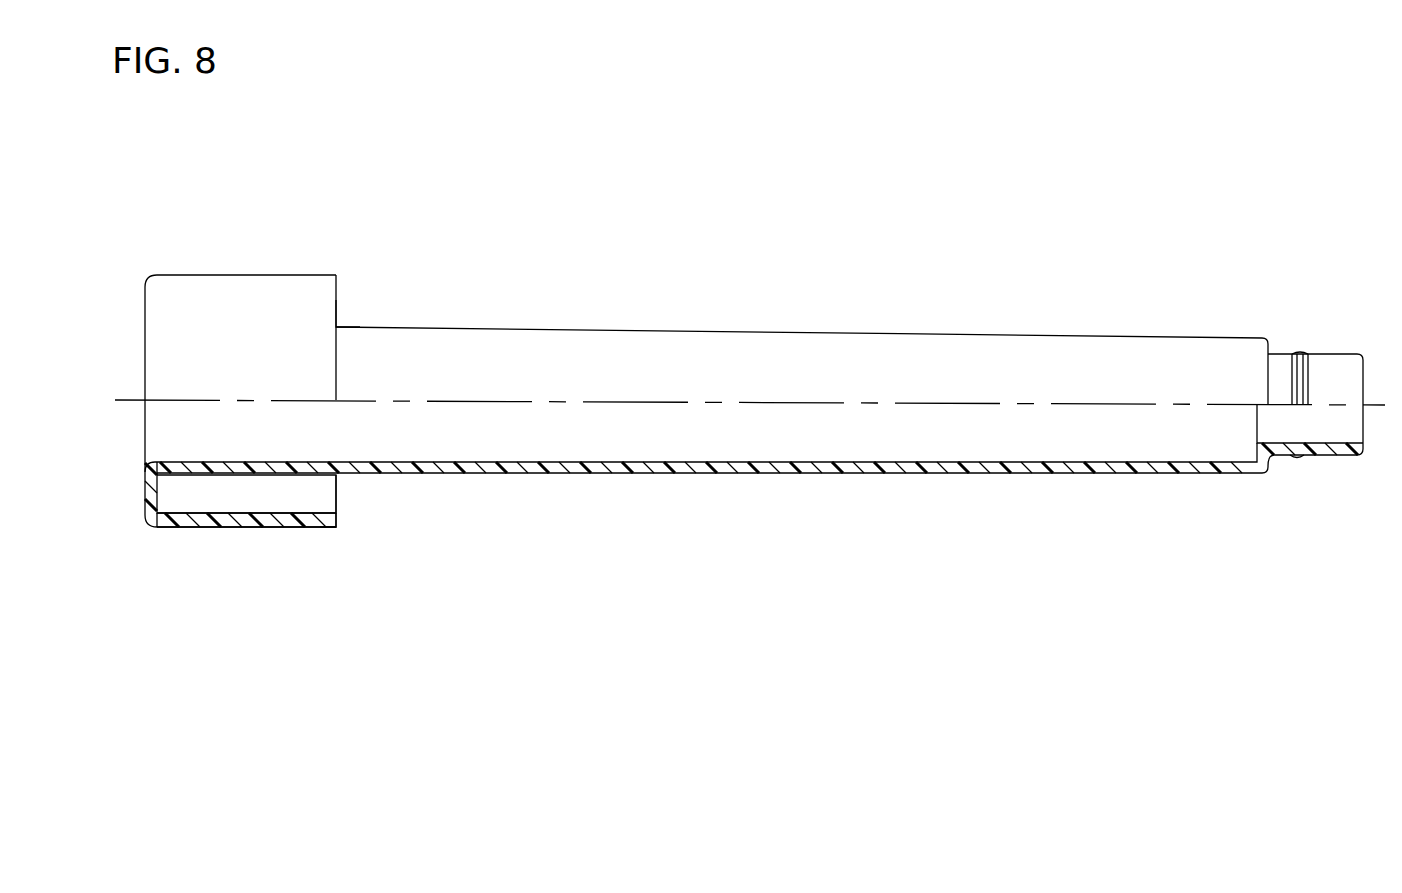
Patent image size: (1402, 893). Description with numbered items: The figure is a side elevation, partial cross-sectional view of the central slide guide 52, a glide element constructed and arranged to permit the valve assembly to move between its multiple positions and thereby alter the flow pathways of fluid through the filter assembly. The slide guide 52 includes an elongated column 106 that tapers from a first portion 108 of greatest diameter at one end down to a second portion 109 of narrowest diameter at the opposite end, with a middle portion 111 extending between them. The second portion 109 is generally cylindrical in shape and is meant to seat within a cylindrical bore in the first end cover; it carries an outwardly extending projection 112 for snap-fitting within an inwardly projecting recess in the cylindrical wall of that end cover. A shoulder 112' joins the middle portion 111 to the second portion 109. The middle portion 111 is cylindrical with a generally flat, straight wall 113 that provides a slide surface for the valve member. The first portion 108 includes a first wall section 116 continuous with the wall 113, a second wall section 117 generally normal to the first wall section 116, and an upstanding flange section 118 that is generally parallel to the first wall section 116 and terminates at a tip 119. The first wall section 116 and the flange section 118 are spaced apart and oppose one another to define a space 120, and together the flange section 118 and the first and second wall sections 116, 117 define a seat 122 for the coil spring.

The central slide guide 52 is at (878, 288).
The elongated column 106 is at (678, 332).
The first portion 108 is at (248, 275).
The second portion 109 is at (1337, 355).
The middle portion 111 is at (978, 333).
The outwardly extending projection 112 is at (1289, 324).
The shoulder 112' is at (1314, 498).
The flat, straight wall 113 is at (503, 470).
The first wall section 116 is at (168, 468).
The second wall section 117 is at (143, 503).
The upstanding flange section 118 is at (198, 518).
The tip 119 is at (336, 303).
The space 120 is at (317, 492).
The seat 122 is at (218, 484).